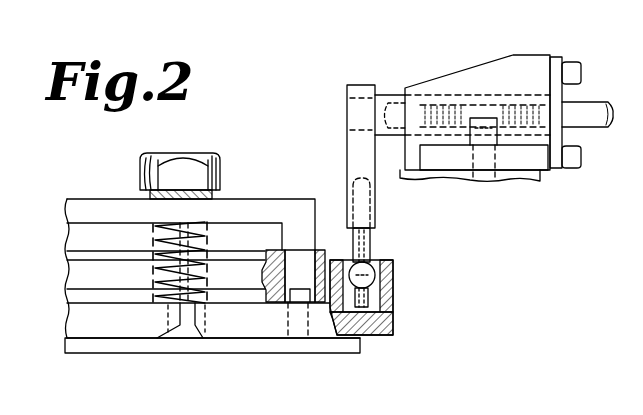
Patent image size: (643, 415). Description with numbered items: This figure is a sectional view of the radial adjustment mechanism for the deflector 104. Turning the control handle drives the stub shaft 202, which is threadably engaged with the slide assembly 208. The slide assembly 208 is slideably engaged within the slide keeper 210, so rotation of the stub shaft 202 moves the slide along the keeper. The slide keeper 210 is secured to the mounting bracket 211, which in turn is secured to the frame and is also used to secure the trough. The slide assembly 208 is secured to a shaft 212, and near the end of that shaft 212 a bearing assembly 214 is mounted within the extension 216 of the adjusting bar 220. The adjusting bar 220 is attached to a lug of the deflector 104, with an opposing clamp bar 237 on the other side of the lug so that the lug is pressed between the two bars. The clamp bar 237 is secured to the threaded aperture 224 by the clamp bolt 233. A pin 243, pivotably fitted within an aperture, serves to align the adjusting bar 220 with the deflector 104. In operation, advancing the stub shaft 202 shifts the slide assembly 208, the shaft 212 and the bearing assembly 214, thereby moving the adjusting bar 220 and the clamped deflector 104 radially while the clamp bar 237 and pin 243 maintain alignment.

The deflector 104 is at (245, 277).
The stub shaft 202 is at (613, 126).
The slide assembly 208 is at (370, 55).
The slide keeper 210 is at (481, 27).
The mounting bracket 211 is at (528, 176).
The shaft 212 is at (372, 235).
The bearing assembly 214 is at (395, 280).
The extension 216 is at (396, 263).
The adjusting bar 220 is at (393, 325).
The threaded aperture 224 is at (177, 318).
The clamp bolt 233 is at (148, 173).
The clamp bar 237 is at (273, 198).
The pin 243 is at (300, 295).